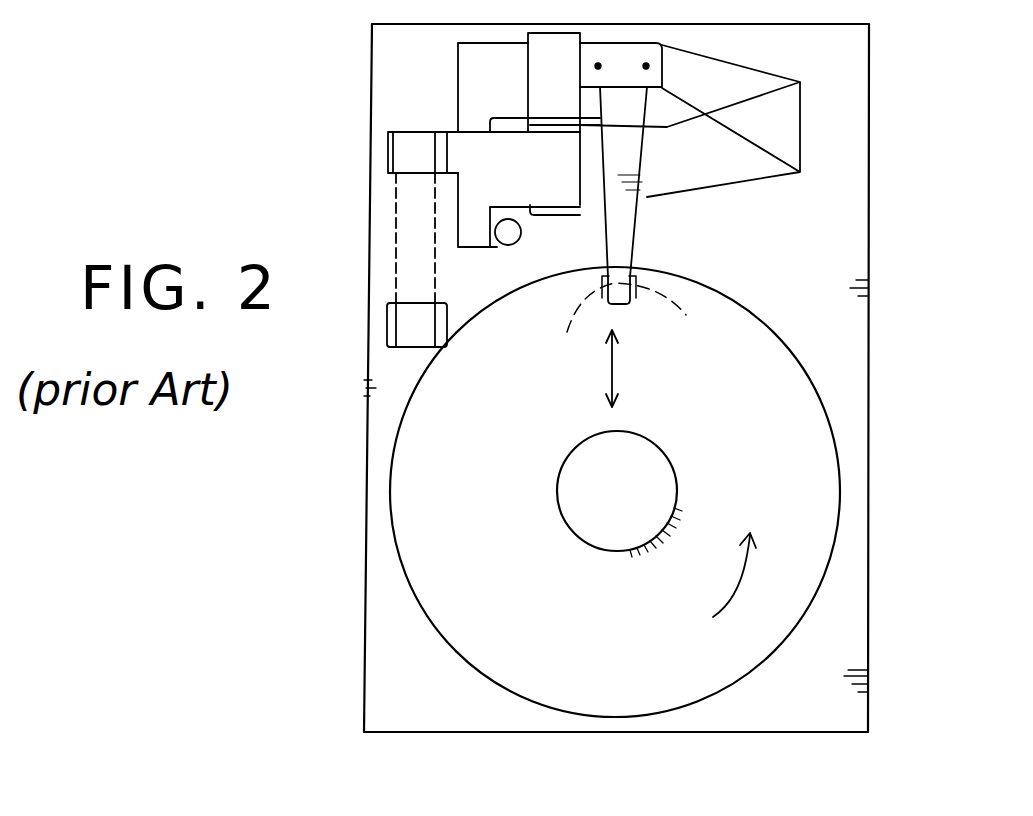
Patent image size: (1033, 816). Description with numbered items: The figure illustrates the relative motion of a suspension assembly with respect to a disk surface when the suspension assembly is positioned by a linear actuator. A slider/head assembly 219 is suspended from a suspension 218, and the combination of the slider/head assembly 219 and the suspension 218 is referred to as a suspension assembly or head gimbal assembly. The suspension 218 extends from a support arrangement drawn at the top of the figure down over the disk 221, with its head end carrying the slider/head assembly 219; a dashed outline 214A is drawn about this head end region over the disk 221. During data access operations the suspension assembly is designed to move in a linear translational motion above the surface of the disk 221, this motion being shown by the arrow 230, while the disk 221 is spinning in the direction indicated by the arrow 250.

The suspension 218 is at (638, 230).
The head position 214A is at (608, 323).
The slider/head assembly 219 is at (647, 366).
The disk 221 is at (822, 477).
The arrow 230 is at (633, 383).
The arrow 250 is at (757, 575).